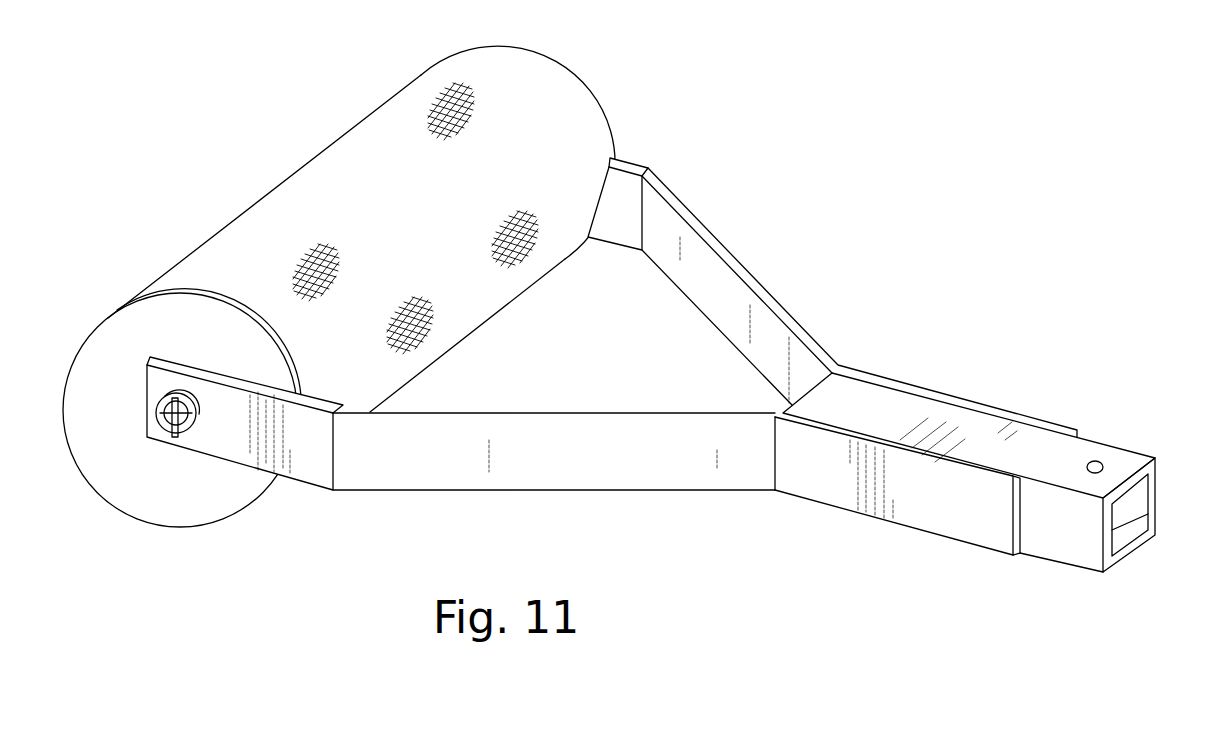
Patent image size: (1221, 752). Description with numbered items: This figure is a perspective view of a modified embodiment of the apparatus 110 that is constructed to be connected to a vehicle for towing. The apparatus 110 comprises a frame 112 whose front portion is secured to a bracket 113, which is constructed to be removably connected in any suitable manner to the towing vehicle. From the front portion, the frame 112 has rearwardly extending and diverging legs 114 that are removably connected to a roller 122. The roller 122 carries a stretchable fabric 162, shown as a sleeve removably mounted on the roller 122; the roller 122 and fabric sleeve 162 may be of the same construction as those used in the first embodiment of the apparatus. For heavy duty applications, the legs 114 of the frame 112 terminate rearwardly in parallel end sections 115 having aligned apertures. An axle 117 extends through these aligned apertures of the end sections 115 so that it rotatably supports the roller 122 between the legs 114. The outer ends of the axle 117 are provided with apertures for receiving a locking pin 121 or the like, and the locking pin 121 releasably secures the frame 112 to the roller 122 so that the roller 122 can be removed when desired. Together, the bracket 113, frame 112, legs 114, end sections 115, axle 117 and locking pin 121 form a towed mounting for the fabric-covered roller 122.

The apparatus 110 is at (900, 136).
The frame 112 is at (792, 304).
The bracket 113 is at (1102, 462).
The legs 114 is at (710, 236).
The end sections 115 is at (632, 160).
The axle 117 is at (188, 413).
The locking pin 121 is at (176, 440).
The roller 122 is at (397, 79).
The stretchable fabric 162 is at (287, 204).